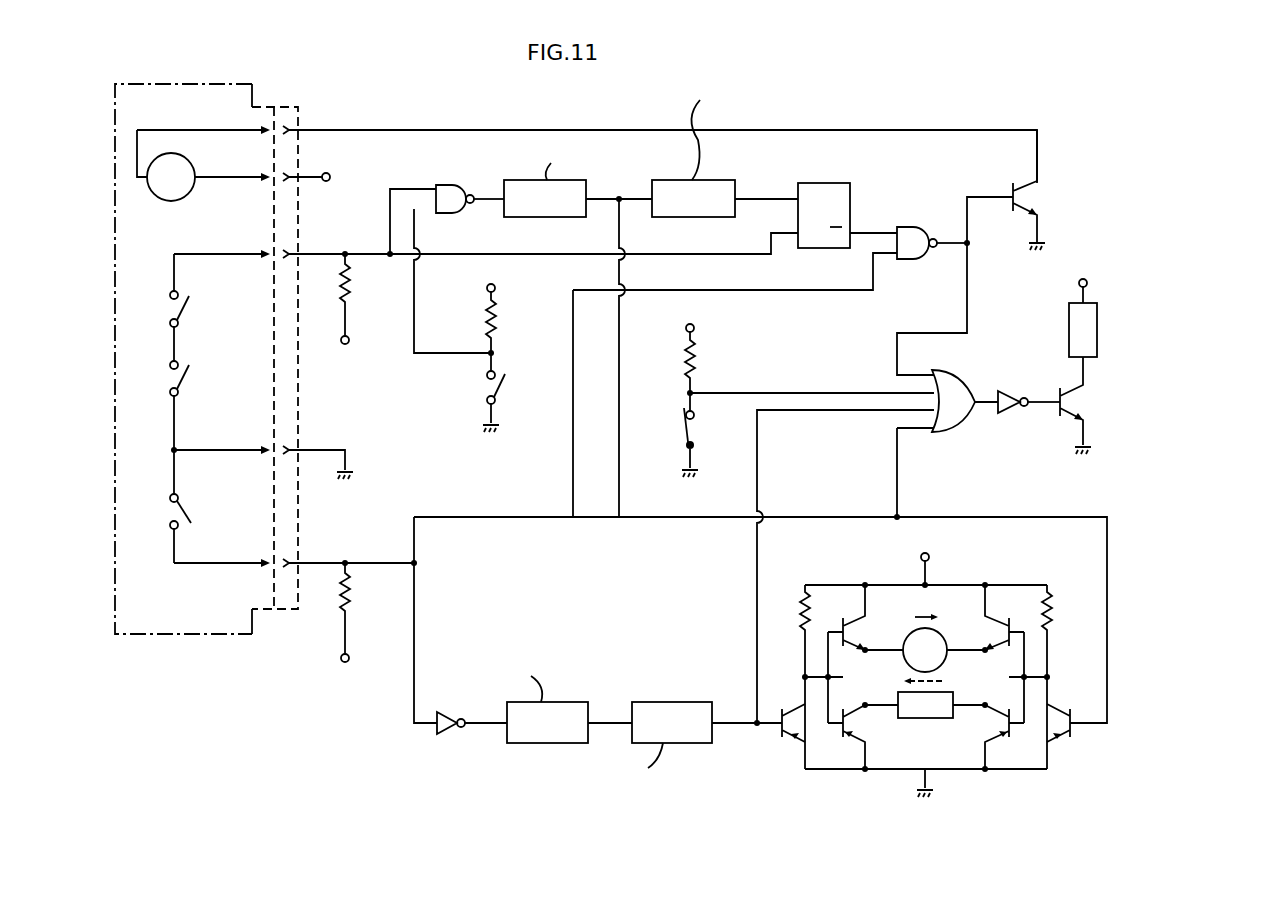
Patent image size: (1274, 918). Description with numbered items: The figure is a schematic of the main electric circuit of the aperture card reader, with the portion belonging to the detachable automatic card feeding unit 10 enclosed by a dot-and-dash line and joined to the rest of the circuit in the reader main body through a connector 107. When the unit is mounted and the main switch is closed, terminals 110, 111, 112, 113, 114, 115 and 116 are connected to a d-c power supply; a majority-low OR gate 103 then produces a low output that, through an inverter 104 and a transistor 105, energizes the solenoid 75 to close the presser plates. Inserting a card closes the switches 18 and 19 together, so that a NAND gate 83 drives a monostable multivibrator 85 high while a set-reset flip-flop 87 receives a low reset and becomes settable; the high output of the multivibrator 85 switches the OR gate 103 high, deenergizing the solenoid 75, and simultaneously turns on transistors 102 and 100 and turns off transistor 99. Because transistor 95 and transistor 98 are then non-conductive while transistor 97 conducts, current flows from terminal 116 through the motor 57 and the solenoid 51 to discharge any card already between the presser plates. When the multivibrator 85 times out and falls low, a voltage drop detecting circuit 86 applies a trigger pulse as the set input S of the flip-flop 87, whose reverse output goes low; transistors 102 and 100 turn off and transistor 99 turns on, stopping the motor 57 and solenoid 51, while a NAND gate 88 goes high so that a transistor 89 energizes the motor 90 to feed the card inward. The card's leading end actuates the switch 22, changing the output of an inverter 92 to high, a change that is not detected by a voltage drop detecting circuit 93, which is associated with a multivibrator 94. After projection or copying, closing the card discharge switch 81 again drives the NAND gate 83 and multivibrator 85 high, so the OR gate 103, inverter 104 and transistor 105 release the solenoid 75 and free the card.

The automatic card feeding unit 10 is at (215, 637).
The connector 107 is at (290, 107).
The motor 90 is at (184, 189).
The terminal 114 is at (339, 164).
The switch 18 is at (187, 309).
The switch 19 is at (187, 366).
The switch 22 is at (182, 506).
The terminal 111 is at (349, 343).
The terminal 112 is at (341, 660).
The NAND gate 83 is at (459, 190).
The monostable multivibrator 85 is at (558, 211).
The voltage drop detecting circuit 86 is at (706, 211).
The set-reset flip-flop 87 is at (800, 184).
The NAND gate 88 is at (913, 238).
The transistor 89 is at (1029, 191).
The terminal 110 is at (495, 286).
The card discharge switch 81 is at (500, 392).
The terminal 113 is at (694, 330).
The set input S is at (692, 430).
The OR gate 103 is at (950, 392).
The inverter 104 is at (1007, 413).
The transistor 105 is at (1080, 398).
The solenoid 75 is at (1087, 336).
The terminal 115 is at (1088, 280).
The terminal 116 is at (940, 548).
The inverter 92 is at (445, 712).
The voltage drop detecting circuit 93 is at (560, 735).
The multivibrator 94 is at (685, 735).
The transistor 95 is at (783, 738).
The transistor 97 is at (865, 630).
The transistor 98 is at (860, 725).
The transistor 99 is at (983, 630).
The transistor 100 is at (997, 725).
The transistor 102 is at (1072, 728).
The motor 57 is at (938, 662).
The solenoid 51 is at (936, 716).